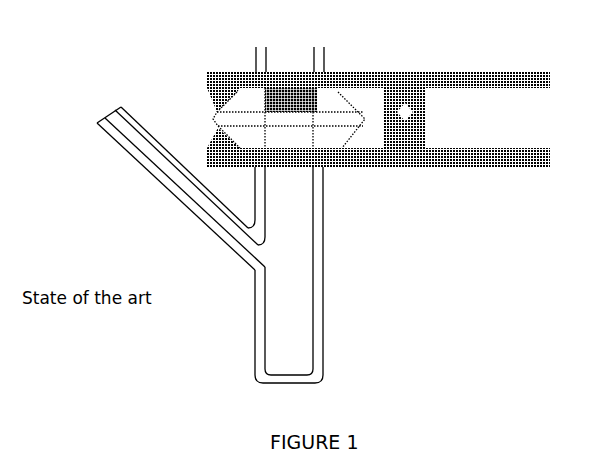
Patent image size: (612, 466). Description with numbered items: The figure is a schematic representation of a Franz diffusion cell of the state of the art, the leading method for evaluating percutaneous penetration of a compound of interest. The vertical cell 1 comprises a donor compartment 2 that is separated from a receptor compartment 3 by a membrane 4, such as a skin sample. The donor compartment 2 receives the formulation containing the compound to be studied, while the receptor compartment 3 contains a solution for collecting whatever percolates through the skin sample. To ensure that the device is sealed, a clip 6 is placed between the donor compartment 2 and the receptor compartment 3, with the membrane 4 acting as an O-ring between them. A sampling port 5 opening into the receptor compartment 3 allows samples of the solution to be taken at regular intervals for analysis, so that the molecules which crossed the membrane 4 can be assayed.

The vertical cell 1 is at (325, 215).
The donor compartment 2 is at (295, 41).
The receptor compartment 3 is at (297, 285).
The membrane 4 is at (309, 123).
The sampling port 5 is at (178, 203).
The clip 6 is at (481, 78).